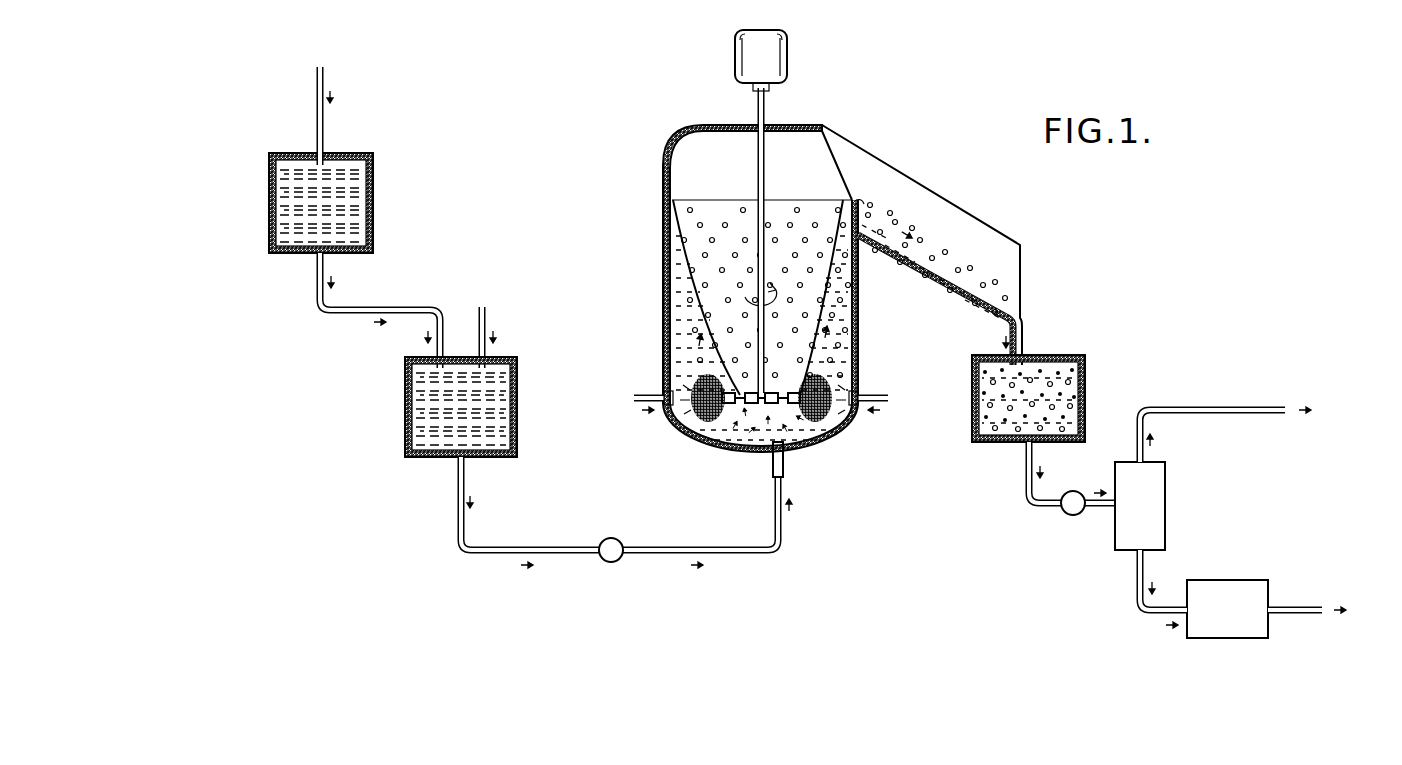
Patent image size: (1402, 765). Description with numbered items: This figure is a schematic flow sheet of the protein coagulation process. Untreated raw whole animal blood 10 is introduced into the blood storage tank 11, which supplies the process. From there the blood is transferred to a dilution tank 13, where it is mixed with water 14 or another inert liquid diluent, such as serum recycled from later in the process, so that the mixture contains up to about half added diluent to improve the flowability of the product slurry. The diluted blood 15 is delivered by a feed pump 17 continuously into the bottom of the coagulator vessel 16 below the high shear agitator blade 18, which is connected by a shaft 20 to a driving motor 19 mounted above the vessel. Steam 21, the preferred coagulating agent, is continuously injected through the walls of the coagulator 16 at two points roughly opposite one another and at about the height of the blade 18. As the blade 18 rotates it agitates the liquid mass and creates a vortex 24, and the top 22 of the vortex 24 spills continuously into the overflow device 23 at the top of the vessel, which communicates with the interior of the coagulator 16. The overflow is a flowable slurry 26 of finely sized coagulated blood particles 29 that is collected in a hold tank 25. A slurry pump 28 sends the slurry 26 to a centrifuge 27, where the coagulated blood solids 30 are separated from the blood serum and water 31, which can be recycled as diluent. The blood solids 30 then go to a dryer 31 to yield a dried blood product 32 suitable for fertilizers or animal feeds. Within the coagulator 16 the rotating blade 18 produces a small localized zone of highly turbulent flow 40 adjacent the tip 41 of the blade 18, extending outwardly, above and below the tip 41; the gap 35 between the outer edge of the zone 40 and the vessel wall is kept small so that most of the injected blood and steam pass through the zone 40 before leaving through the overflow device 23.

The raw whole animal blood 10 is at (382, 308).
The blood storage tank 11 is at (269, 200).
The dilution tank 13 is at (405, 412).
The water 14 is at (485, 318).
The diluted blood 15 is at (762, 556).
The coagulator vessel 16 is at (663, 230).
The feed pump 17 is at (611, 563).
The high shear agitator blade 18 is at (740, 404).
The driving motor 19 is at (789, 61).
The shaft 20 is at (764, 168).
The steam 21 is at (888, 400).
The top of the vortex 22 is at (813, 200).
The overflow device 23 is at (928, 283).
The vortex 24 is at (690, 235).
The hold tank 25 is at (993, 444).
The slurry of coagulated blood particles 26 is at (1024, 338).
The centrifuge 27 is at (1165, 522).
The slurry pump 28 is at (1071, 516).
The coagulated blood particles 29 is at (680, 297).
The coagulated blood solids 30 is at (1137, 596).
The blood serum and water 31 is at (1203, 658).
The dried blood product 32 is at (1308, 613).
The gap 35 is at (690, 385).
The zone of highly turbulent flow 40 is at (822, 418).
The tip of blade 41 is at (800, 392).